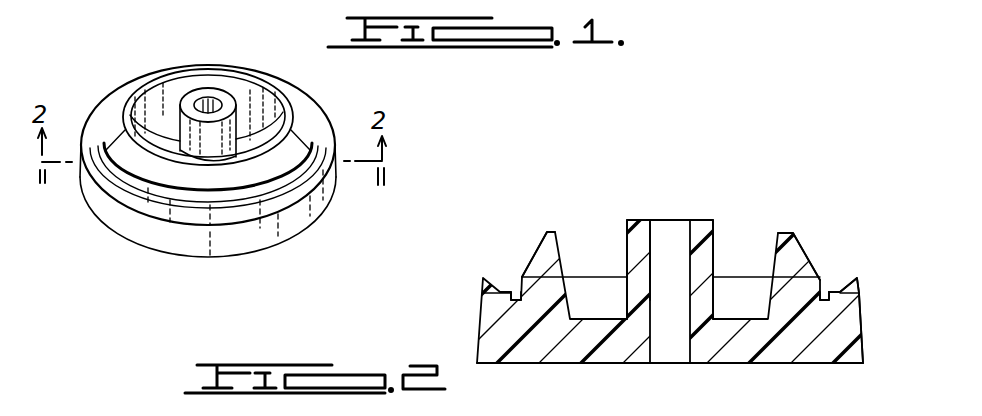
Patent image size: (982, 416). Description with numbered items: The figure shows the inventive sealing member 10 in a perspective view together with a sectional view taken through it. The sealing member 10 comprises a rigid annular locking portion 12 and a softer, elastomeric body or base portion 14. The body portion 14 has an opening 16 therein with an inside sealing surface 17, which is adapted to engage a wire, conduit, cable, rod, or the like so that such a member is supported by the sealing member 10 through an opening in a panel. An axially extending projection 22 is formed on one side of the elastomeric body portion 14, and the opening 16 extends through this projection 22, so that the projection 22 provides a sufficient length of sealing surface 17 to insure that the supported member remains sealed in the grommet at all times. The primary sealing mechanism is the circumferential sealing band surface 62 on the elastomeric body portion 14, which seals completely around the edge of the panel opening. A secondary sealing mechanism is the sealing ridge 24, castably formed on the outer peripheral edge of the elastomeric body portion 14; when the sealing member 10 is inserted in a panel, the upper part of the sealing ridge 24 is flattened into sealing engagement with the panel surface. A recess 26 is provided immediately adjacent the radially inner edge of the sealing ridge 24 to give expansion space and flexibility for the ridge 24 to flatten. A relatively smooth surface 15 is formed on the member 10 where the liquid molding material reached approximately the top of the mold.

In FIG. 1, the sealing member 10 is at (108, 263).
In FIG. 2, the sealing member 10 is at (458, 306).
In FIG. 1, the rigid annular locking portion 12 is at (115, 128).
In FIG. 2, the rigid annular locking portion 12 is at (794, 235).
In FIG. 1, the elastomeric body portion 14 is at (289, 218).
In FIG. 2, the elastomeric body portion 14 is at (795, 352).
In FIG. 2, the relatively smooth surface 15 is at (735, 364).
In FIG. 1, the opening 16 is at (219, 99).
In FIG. 2, the opening 16 is at (678, 325).
In FIG. 2, the inside sealing surface 17 is at (650, 238).
In FIG. 1, the axially extending projection 22 is at (237, 108).
In FIG. 2, the axially extending projection 22 is at (700, 221).
In FIG. 1, the sealing ridge 24 is at (310, 123).
In FIG. 2, the sealing ridge 24 is at (861, 311).
In FIG. 2, the recess 26 is at (824, 293).
In FIG. 2, the sealing band surface 62 is at (514, 293).